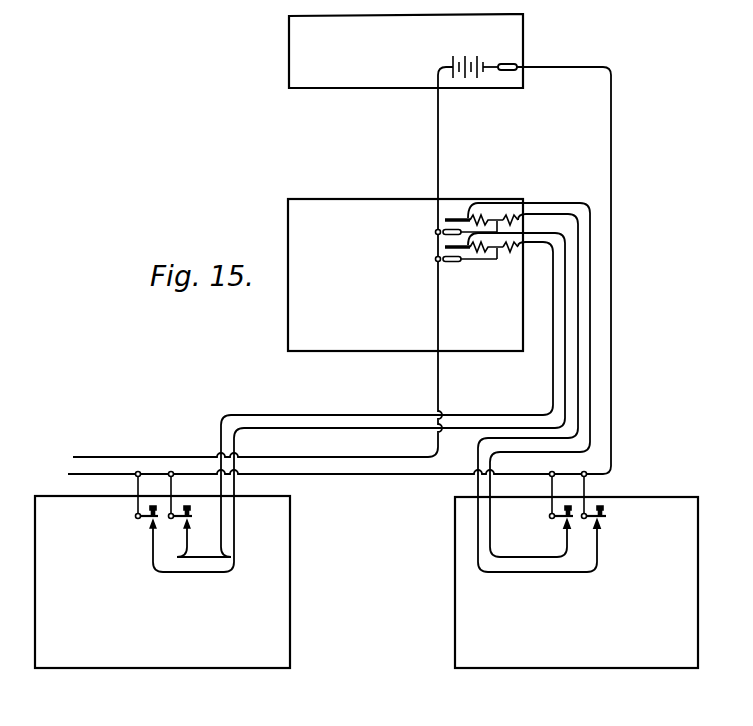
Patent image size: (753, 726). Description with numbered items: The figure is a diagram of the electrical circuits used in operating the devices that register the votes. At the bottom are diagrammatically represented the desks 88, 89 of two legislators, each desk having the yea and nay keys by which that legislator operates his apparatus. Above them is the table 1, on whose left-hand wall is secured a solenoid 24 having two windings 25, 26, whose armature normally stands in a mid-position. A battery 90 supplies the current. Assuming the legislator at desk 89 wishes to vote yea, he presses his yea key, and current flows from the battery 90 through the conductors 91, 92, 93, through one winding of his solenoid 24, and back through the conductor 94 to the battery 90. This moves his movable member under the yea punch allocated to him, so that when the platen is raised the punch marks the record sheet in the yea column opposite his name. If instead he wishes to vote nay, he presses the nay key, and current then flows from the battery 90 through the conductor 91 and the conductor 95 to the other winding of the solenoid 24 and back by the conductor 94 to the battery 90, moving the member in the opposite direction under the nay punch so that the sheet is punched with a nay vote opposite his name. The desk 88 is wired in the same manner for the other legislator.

The table 1 is at (405, 275).
The solenoid 24 is at (495, 219).
The winding 25 is at (475, 217).
The winding 26 is at (521, 216).
The desk 88 is at (162, 570).
The desk 89 is at (576, 582).
The battery 90 is at (469, 58).
The conductor 91 is at (585, 270).
The conductor 92 is at (588, 486).
The conductor 93 is at (580, 412).
The conductor 94 is at (434, 235).
The conductor 95 is at (592, 384).